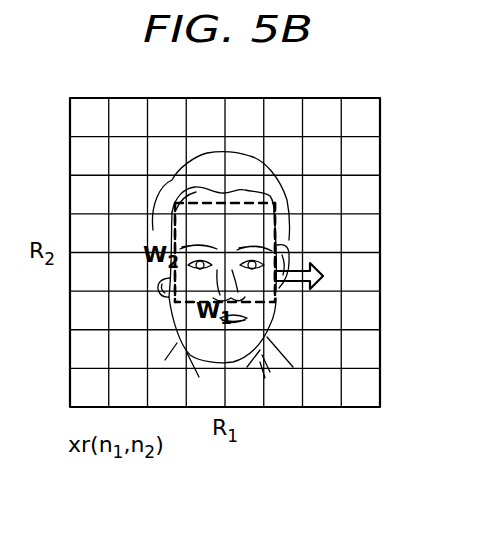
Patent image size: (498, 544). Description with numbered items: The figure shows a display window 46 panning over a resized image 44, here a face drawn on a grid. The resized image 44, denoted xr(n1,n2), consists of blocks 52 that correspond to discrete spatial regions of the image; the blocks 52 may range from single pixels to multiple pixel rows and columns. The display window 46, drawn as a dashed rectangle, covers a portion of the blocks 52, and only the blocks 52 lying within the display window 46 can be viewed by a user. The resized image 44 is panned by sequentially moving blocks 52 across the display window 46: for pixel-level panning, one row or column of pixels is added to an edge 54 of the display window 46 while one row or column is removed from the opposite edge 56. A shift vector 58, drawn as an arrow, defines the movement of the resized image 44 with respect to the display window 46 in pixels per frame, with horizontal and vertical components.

The resized image 44 is at (322, 98).
The blocks 52 is at (248, 107).
The display window 46 is at (246, 203).
The edge 54 is at (278, 246).
The opposite edge 56 is at (167, 292).
The shift vector 58 is at (311, 284).